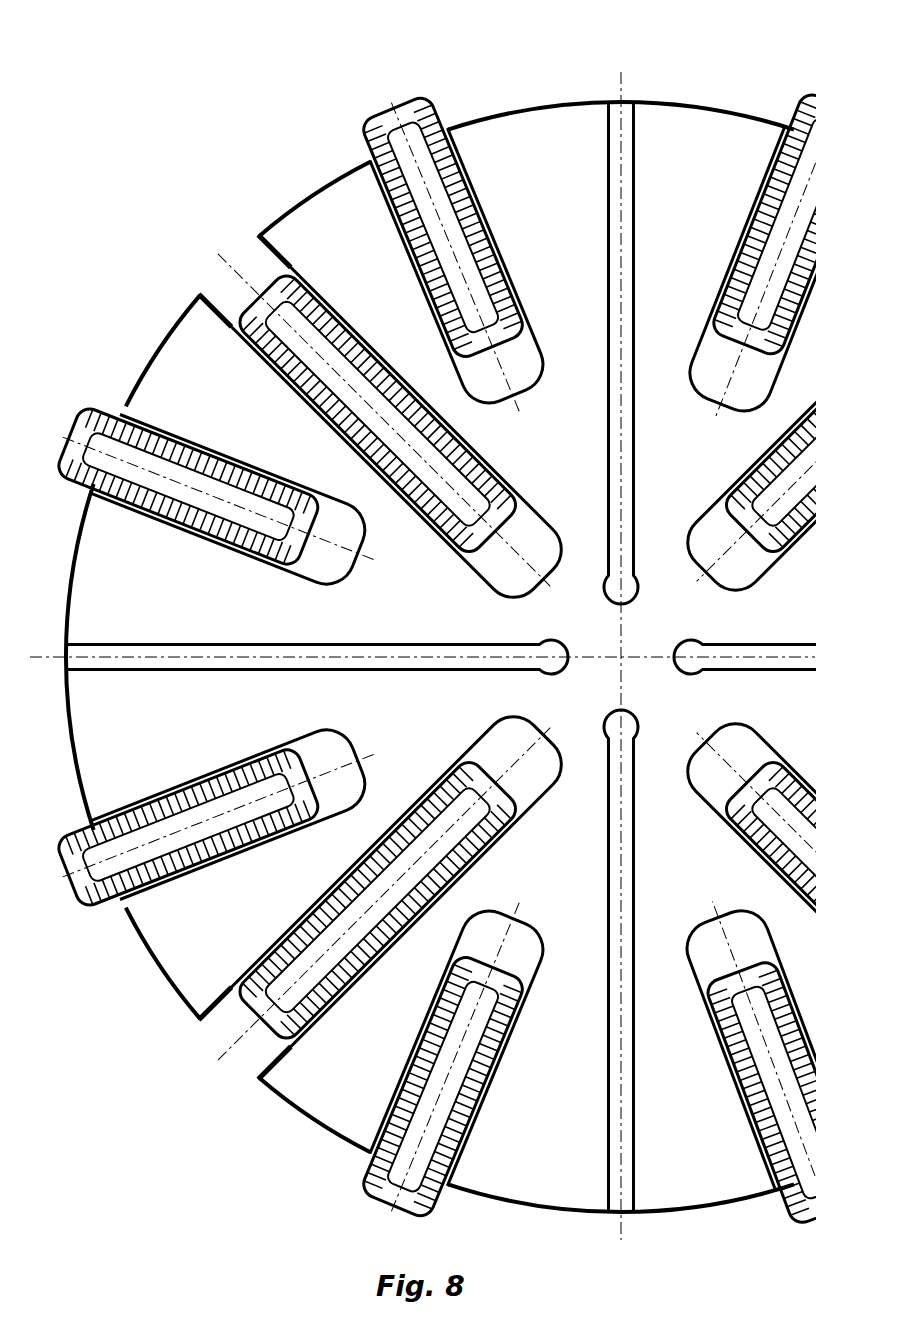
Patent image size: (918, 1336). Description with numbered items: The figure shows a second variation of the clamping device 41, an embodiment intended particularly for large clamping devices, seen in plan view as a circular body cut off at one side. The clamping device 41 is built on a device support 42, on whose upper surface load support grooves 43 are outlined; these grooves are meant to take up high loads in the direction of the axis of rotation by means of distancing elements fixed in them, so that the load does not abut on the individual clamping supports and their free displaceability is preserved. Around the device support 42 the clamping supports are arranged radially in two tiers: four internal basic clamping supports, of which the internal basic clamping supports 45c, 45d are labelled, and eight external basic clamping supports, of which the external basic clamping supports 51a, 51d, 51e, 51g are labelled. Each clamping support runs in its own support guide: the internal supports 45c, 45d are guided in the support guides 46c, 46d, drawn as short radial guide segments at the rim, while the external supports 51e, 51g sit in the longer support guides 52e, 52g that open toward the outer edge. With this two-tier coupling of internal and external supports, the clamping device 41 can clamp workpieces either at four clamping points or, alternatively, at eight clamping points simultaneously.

The clamping device 41 is at (121, 97).
The device support 42 is at (535, 160).
The load support grooves 43 is at (627, 190).
The internal basic clamping support 45c is at (237, 337).
The internal basic clamping support 45d is at (247, 973).
The support guide 46c is at (281, 263).
The support guide 46d is at (274, 1053).
The external basic clamping support 51a is at (795, 1206).
The external basic clamping support 51d is at (795, 108).
The external basic clamping support 51e is at (383, 128).
The external basic clamping support 51g is at (85, 880).
The support guide 52e is at (389, 211).
The support guide 52g is at (113, 806).